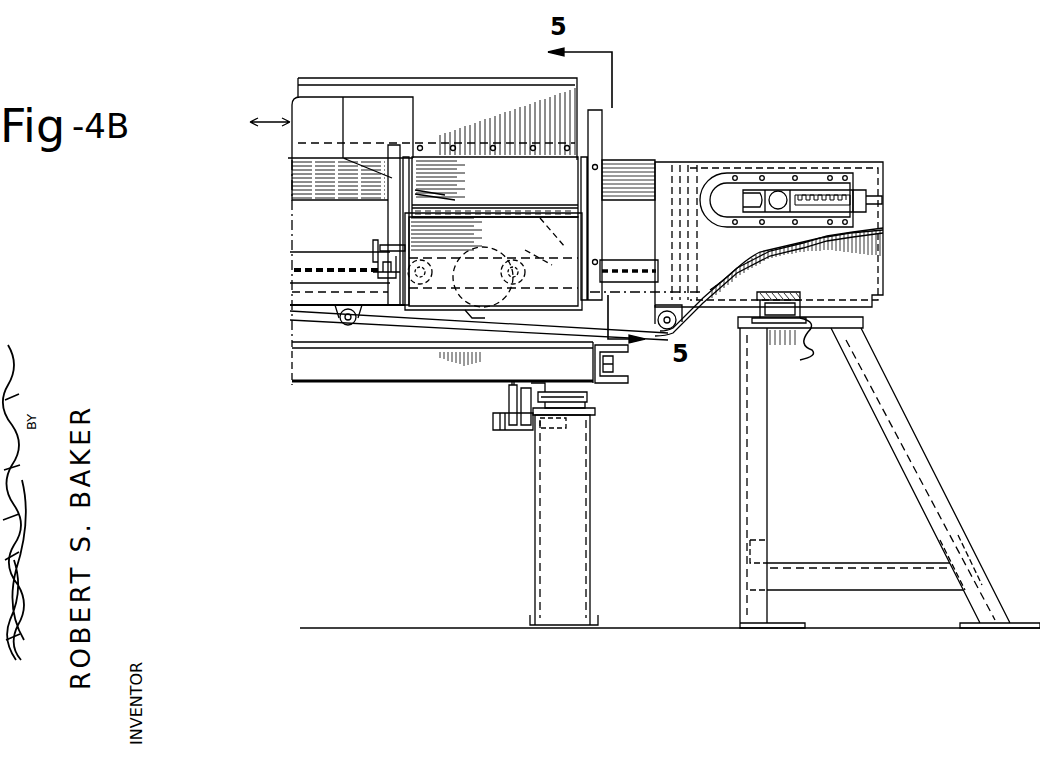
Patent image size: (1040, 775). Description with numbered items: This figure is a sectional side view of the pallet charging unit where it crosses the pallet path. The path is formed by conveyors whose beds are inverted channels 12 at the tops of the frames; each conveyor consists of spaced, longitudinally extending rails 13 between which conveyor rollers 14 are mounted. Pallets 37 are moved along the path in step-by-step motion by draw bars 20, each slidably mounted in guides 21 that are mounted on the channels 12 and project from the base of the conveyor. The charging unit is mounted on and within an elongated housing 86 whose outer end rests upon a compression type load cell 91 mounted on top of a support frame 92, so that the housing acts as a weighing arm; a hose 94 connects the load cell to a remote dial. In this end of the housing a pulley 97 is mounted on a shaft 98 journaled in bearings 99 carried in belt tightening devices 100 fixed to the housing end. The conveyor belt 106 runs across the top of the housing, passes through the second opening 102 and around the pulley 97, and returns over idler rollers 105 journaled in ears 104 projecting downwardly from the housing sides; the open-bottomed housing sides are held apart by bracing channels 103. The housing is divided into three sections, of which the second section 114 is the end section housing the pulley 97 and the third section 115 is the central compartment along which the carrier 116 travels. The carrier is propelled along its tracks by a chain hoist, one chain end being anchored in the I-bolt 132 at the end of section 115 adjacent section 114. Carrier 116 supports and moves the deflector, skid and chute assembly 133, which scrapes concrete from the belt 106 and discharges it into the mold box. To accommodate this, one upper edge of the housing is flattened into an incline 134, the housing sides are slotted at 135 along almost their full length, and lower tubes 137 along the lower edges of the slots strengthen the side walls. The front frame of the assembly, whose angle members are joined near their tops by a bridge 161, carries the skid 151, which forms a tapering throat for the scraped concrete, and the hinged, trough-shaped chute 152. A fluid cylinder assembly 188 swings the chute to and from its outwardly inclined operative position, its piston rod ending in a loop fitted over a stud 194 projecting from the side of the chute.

The inverted channels 12 is at (595, 420).
The rails 13 is at (595, 410).
The conveyor rollers 14 is at (587, 396).
The draw bars 20 is at (505, 400).
The guides 21 is at (508, 418).
The pallets 37 is at (385, 375).
The elongated housing 86 is at (677, 160).
The compression type load cell 91 is at (805, 300).
The support frame 92 is at (740, 405).
The hose 94 is at (812, 348).
The pulley 97 is at (812, 172).
The shaft 98 is at (778, 192).
The bearings 99 is at (772, 215).
The belt tightening devices 100 is at (850, 190).
The second opening 102 is at (846, 165).
The bracing channels 103 is at (505, 318).
The ears 104 is at (688, 322).
The idler rollers 105 is at (660, 320).
The conveyor belt 106 is at (305, 322).
The second section 114 is at (885, 238).
The third section 115 is at (625, 160).
The carrier 116 is at (558, 250).
The I-bolt 132 is at (675, 268).
The deflector, skid and chute assembly 133 is at (455, 187).
The incline 134 is at (305, 182).
The slots 135 is at (320, 262).
The lower tubes 137 is at (292, 290).
The skid 151 is at (527, 187).
The chute 152 is at (437, 298).
The bridge 161 is at (522, 270).
The fluid cylinder assembly 188 is at (380, 270).
The stud 194 is at (395, 246).